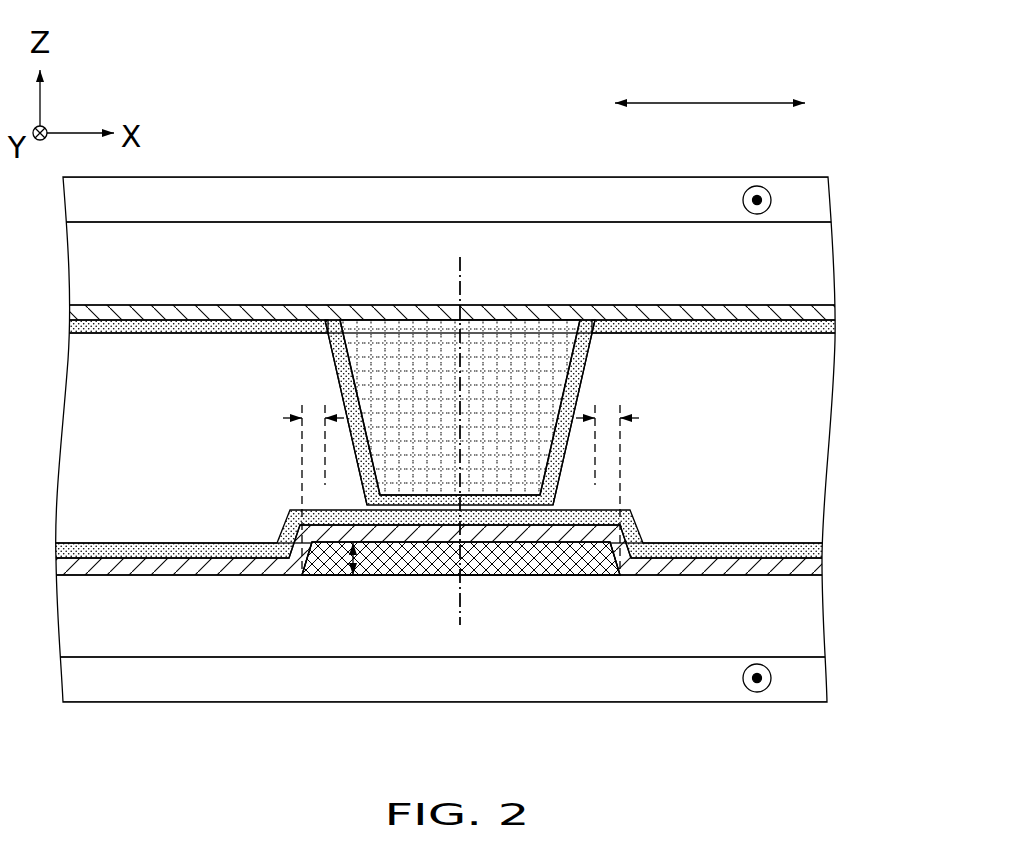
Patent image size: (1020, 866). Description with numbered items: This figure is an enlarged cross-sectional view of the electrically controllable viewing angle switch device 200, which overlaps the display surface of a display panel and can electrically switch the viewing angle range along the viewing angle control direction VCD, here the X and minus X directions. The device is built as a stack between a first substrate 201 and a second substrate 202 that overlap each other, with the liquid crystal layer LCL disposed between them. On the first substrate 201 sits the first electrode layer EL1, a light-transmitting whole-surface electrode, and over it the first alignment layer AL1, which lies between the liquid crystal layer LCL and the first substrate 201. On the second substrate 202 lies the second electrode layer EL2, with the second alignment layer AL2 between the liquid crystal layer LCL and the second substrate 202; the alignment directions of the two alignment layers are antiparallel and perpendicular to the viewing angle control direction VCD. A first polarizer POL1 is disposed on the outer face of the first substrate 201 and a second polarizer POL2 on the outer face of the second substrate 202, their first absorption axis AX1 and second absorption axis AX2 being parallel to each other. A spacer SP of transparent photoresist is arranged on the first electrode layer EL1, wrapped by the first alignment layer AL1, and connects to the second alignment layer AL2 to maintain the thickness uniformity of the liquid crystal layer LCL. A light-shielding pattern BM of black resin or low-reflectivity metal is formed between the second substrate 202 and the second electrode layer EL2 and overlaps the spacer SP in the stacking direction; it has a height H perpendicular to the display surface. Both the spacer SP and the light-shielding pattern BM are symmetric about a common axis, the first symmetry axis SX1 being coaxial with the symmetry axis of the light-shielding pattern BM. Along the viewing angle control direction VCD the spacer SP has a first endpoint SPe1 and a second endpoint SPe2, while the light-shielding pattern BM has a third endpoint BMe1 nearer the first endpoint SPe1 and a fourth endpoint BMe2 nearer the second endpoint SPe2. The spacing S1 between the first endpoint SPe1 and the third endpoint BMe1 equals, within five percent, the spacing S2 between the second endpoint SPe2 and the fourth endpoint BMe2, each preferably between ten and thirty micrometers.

The electrically controllable viewing angle switch device 200 is at (813, 772).
The first polarizer POL1 is at (818, 200).
The first substrate 201 is at (818, 265).
The first electrode layer EL1 is at (817, 309).
The first alignment layer AL1 is at (830, 326).
The liquid crystal layer LCL is at (820, 438).
The second alignment layer AL2 is at (815, 550).
The second electrode layer EL2 is at (815, 565).
The light-shielding pattern BM is at (530, 558).
The second substrate 202 is at (813, 618).
The second polarizer POL2 is at (817, 685).
The first absorption axis AX1 is at (772, 200).
The second absorption axis AX2 is at (743, 680).
The viewing angle control direction VCD is at (710, 86).
The spacer SP is at (405, 350).
The first symmetry axis SX1 is at (462, 270).
The first endpoint SPe1 is at (325, 320).
The second endpoint SPe2 is at (595, 320).
The spacing S1 is at (313, 475).
The spacing S2 is at (607, 475).
The third endpoint BMe1 is at (300, 565).
The fourth endpoint BMe2 is at (621, 565).
The height H is at (333, 558).